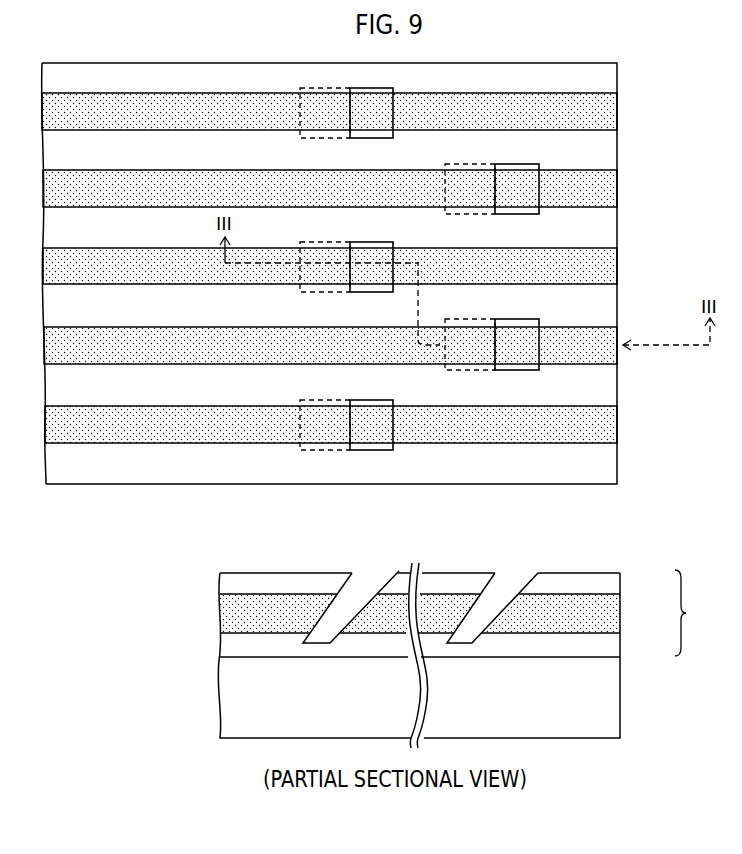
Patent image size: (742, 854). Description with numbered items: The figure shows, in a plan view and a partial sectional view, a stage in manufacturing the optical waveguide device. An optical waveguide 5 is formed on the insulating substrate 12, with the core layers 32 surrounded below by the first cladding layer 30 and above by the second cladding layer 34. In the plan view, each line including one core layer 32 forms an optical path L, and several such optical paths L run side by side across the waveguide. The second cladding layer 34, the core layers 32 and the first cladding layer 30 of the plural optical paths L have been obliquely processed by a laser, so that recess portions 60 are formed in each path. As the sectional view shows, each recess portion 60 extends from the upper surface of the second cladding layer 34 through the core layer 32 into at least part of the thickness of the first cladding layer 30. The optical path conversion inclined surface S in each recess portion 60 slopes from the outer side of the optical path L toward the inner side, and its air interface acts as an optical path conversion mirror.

The second cladding layer 34 is at (610, 303).
The first cladding layer 30 is at (612, 647).
The core layer 32 is at (595, 262).
The insulating substrate 12 is at (612, 696).
The recess portion 60 is at (518, 370).
The optical path conversion inclined surface S is at (463, 345).
The optical waveguide 5 is at (690, 613).
The optical path L is at (627, 262).